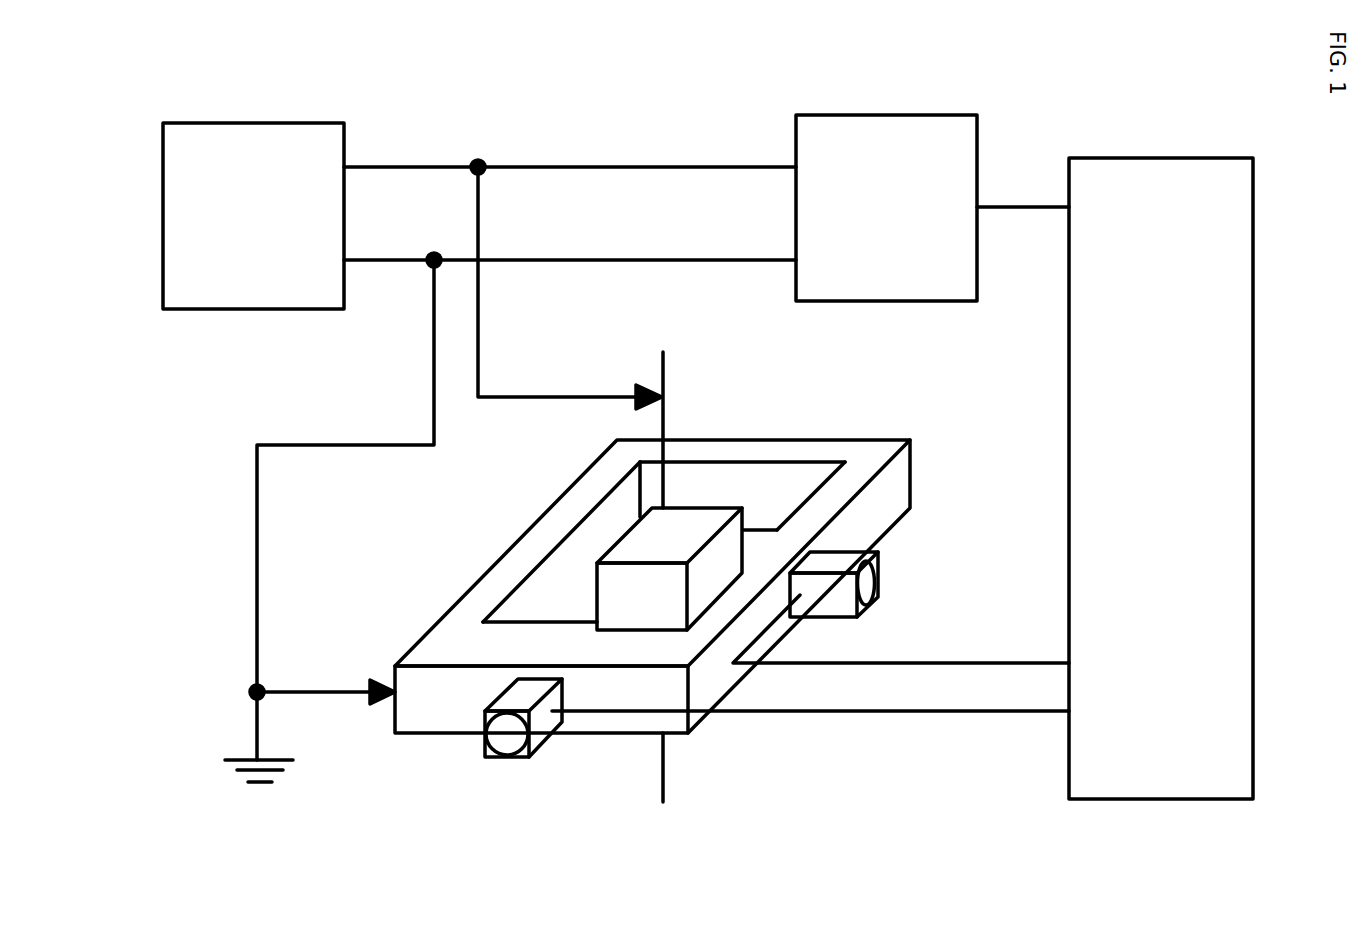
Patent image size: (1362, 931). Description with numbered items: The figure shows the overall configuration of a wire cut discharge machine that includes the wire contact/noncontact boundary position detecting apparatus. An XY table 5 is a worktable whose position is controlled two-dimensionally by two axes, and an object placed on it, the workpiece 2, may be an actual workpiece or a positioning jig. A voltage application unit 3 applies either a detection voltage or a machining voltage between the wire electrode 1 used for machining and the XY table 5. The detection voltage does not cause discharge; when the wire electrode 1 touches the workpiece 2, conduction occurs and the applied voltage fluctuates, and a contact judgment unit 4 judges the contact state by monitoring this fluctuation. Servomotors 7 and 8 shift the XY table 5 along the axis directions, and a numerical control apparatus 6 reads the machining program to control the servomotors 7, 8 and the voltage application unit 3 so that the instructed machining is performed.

The wire electrode 1 is at (707, 577).
The workpiece 2 is at (630, 553).
The voltage application unit 3 is at (253, 256).
The contact judgment unit 4 is at (886, 249).
The XY table 5 is at (641, 586).
The numerical control apparatus 6 is at (1128, 478).
The servomotor 7 is at (491, 734).
The servomotor 8 is at (862, 600).